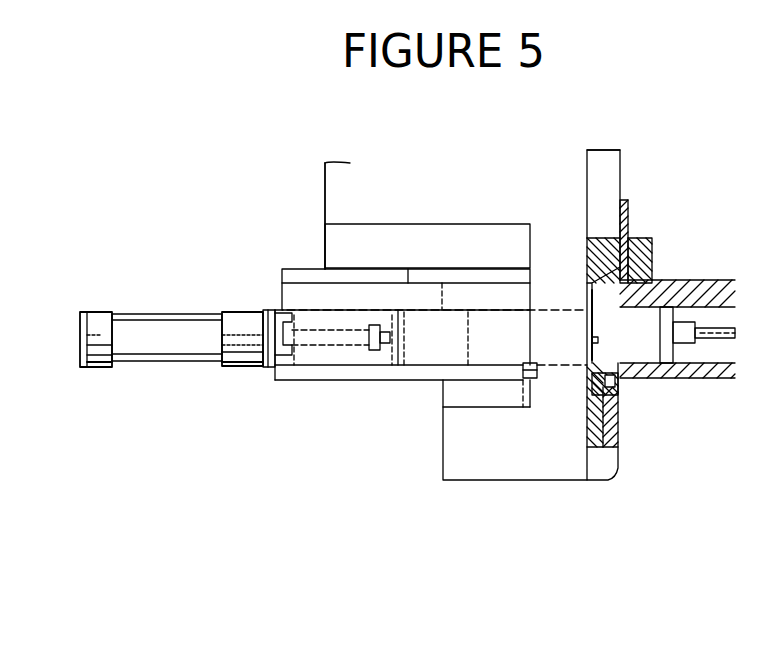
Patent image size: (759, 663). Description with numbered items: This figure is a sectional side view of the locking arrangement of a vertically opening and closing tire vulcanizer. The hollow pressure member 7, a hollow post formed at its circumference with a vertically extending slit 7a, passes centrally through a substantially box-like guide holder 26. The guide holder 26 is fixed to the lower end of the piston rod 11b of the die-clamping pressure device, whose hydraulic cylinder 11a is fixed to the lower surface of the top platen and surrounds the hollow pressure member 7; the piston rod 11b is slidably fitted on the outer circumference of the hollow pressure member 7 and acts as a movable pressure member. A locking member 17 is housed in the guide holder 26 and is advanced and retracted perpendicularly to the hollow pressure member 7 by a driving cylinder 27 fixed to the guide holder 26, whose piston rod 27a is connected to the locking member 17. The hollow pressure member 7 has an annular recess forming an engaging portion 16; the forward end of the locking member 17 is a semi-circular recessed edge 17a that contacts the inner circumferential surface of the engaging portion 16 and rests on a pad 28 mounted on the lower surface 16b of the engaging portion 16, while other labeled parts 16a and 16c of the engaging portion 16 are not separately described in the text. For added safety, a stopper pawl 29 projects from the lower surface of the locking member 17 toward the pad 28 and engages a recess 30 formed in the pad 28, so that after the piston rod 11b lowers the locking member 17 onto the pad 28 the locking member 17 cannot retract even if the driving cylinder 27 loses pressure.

The hollow pressure member 7 is at (620, 437).
The slit 7a is at (602, 155).
The hydraulic cylinder 11a is at (333, 187).
The piston rod 11b is at (483, 266).
The engaging portion 16 is at (590, 283).
The flange face 16a is at (590, 313).
The lower surface of the engaging portion 16b is at (608, 437).
The flange upper portion 16c is at (610, 250).
The locking member 17 is at (421, 350).
The semi-circular recessed edge 17a is at (468, 347).
The guide holder 26 is at (304, 300).
The driving cylinder 27 is at (180, 360).
The piston rod 27a is at (318, 347).
The pad 28 is at (492, 396).
The stopper pawl 29 is at (530, 365).
The recess 30 is at (529, 380).